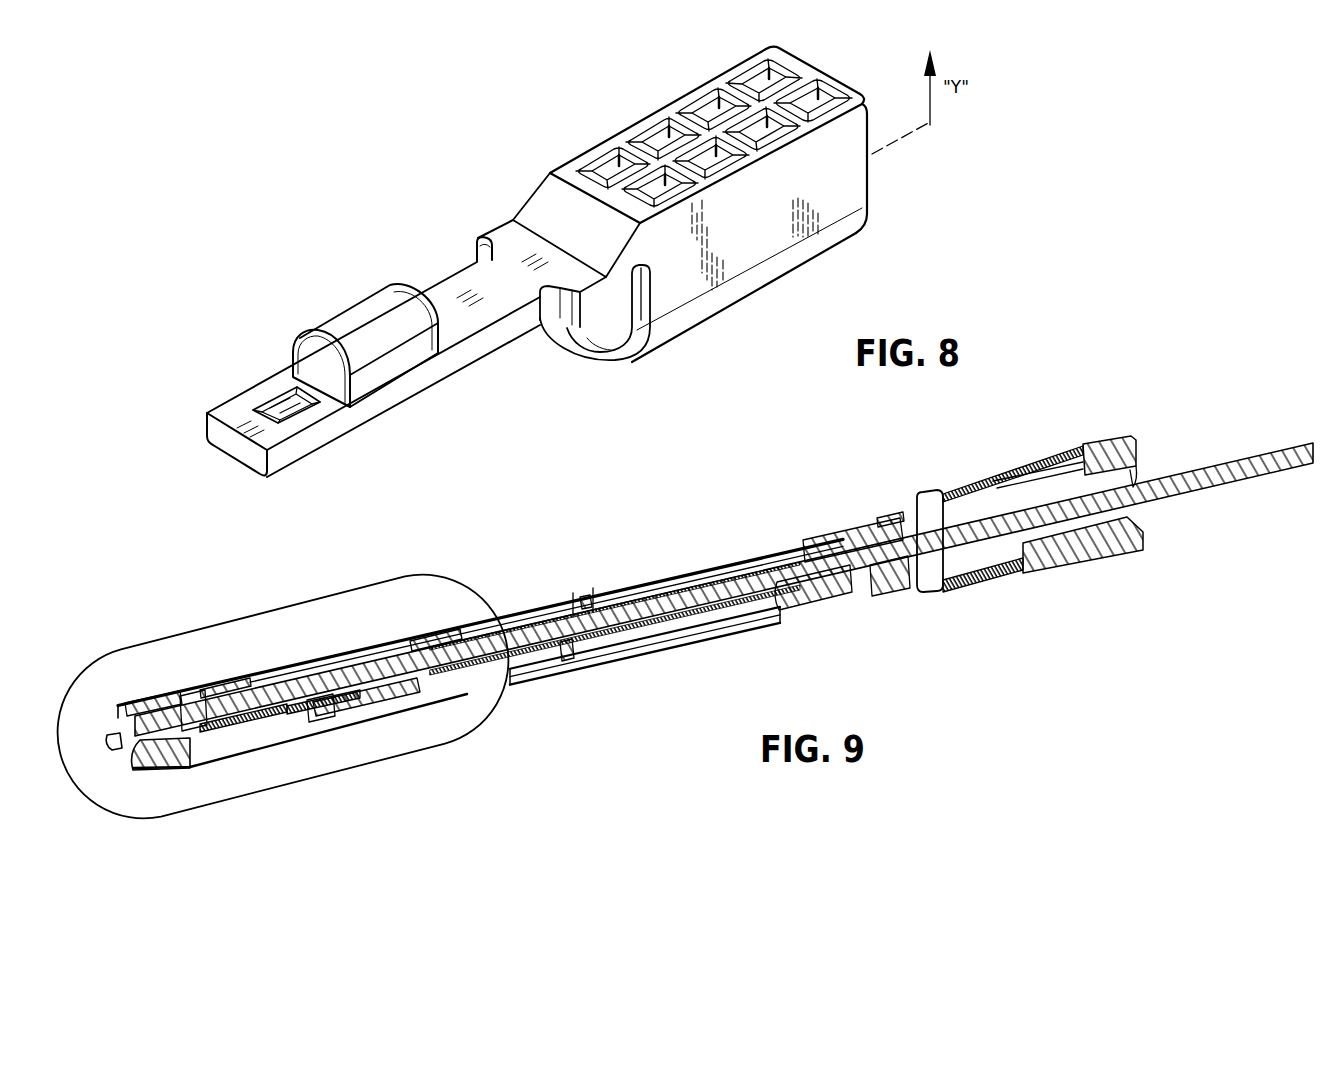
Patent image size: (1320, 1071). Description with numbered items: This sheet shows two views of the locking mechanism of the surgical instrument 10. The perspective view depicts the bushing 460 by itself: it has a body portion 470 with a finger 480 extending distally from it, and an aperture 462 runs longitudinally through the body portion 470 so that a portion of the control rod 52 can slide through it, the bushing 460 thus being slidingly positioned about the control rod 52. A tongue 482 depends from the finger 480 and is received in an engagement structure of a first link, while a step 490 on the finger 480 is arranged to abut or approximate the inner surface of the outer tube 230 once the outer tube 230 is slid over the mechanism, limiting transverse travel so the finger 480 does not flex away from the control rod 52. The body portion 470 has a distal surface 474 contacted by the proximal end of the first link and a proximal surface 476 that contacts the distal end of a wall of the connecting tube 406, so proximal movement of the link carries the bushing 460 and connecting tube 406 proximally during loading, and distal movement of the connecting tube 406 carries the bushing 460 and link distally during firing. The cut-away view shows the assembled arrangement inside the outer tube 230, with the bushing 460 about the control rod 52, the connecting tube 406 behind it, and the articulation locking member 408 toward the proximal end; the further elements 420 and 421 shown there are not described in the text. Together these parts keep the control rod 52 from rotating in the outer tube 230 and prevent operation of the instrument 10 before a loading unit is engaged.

In FIG. 8, the bushing 460 is at (560, 96).
In FIG. 9, the bushing 460 is at (447, 630).
In FIG. 8, the body portion 470 is at (672, 108).
In FIG. 8, the distal surface 474 is at (644, 297).
In FIG. 8, the proximal surface 476 is at (870, 170).
In FIG. 8, the aperture 462 is at (610, 333).
In FIG. 8, the finger 480 is at (305, 292).
In FIG. 8, the tongue 482 is at (290, 407).
In FIG. 8, the step 490 is at (360, 310).
In FIG. 9, the instrument 10 is at (265, 612).
In FIG. 9, the connecting tube 406 is at (548, 615).
In FIG. 9, the outer tube 230 is at (605, 592).
In FIG. 9, the articulation locking member 408 is at (950, 497).
In FIG. 9, the sleeve 421 is at (1037, 477).
In FIG. 9, the collar 420 is at (1107, 443).
In FIG. 9, the control rod 52 is at (1222, 483).